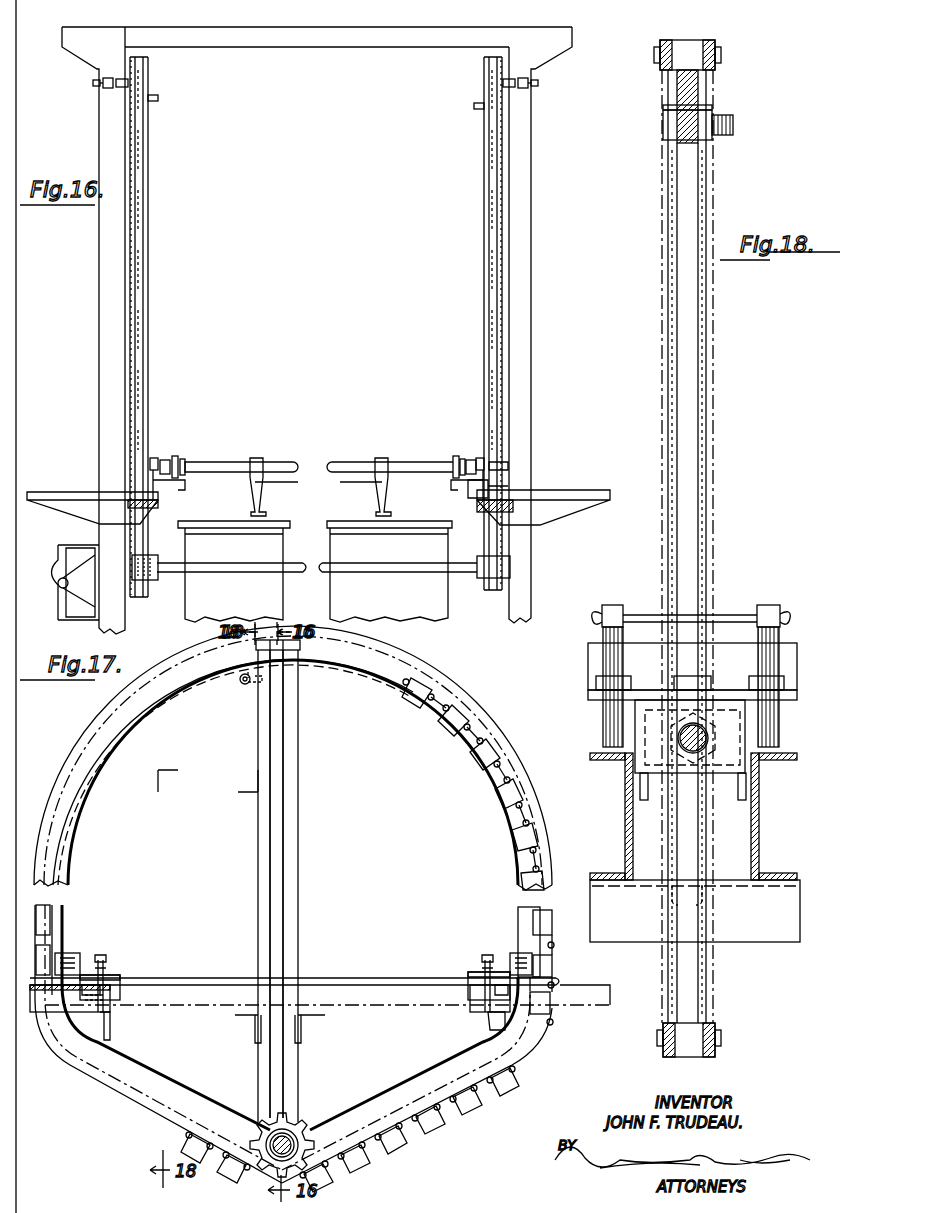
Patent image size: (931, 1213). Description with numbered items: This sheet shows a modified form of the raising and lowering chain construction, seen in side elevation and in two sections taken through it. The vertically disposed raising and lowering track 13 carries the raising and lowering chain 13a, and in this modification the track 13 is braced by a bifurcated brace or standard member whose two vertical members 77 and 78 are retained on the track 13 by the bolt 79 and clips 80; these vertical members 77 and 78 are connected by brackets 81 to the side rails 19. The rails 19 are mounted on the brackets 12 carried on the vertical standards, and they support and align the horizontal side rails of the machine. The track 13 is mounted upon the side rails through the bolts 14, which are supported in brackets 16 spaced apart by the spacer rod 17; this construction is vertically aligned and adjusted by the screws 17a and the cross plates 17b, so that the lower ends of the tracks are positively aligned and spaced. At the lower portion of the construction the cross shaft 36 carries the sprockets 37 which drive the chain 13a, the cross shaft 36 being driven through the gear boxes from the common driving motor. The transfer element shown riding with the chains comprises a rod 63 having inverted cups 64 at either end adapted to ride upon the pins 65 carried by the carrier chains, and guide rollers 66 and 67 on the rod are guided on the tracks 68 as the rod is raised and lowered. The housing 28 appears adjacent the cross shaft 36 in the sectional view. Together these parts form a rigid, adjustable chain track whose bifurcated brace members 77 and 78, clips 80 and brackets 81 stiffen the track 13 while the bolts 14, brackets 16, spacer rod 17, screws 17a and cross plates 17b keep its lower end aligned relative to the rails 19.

In FIG. 16, the bracket 12 is at (487, 521).
In FIG. 16, the raising and lowering track 13 is at (140, 180).
In FIG. 17, the raising and lowering track 13 is at (436, 718).
In FIG. 18, the raising and lowering track 13 is at (700, 202).
In FIG. 16, the raising and lowering chain 13a is at (148, 221).
In FIG. 17, the raising and lowering chain 13a is at (490, 736).
In FIG. 18, the raising and lowering chain 13a is at (718, 69).
In FIG. 17, the bolt 14 is at (82, 958).
In FIG. 18, the bolt 14 is at (690, 857).
In FIG. 16, the bracket 16 is at (508, 469).
In FIG. 17, the bracket 16 is at (122, 990).
In FIG. 18, the bracket 16 is at (750, 749).
In FIG. 17, the spacer rod 17 is at (362, 978).
In FIG. 18, the spacer rod 17 is at (680, 741).
In FIG. 17, the screw 17a is at (102, 955).
In FIG. 18, the screw 17a is at (770, 645).
In FIG. 17, the cross plate 17b is at (112, 975).
In FIG. 18, the cross plate 17b is at (596, 696).
In FIG. 16, the rail 19 is at (508, 486).
In FIG. 17, the rail 19 is at (108, 1015).
In FIG. 18, the rail 19 is at (627, 826).
In FIG. 16, the housing 28 is at (448, 612).
In FIG. 16, the cross shaft 36 is at (222, 573).
In FIG. 17, the cross shaft 36 is at (292, 1138).
In FIG. 16, the sprocket 37 is at (150, 590).
In FIG. 17, the sprocket 37 is at (255, 1127).
In FIG. 16, the rod 63 is at (230, 462).
In FIG. 16, the inverted cup 64 is at (165, 461).
In FIG. 16, the pin 65 is at (158, 98).
In FIG. 16, the guide roller 66 is at (186, 464).
In FIG. 16, the guide roller 67 is at (454, 463).
In FIG. 16, the track 68 is at (185, 483).
In FIG. 17, the bifurcated brace or standard member 77 is at (300, 862).
In FIG. 16, the bifurcated brace or standard member 78 is at (527, 167).
In FIG. 17, the bifurcated brace or standard member 78 is at (258, 806).
In FIG. 16, the bolt 79 is at (146, 83).
In FIG. 17, the bolt 79 is at (243, 683).
In FIG. 16, the clip 80 is at (112, 88).
In FIG. 17, the clip 80 is at (256, 686).
In FIG. 18, the clip 80 is at (735, 131).
In FIG. 17, the bracket 81 is at (255, 1032).